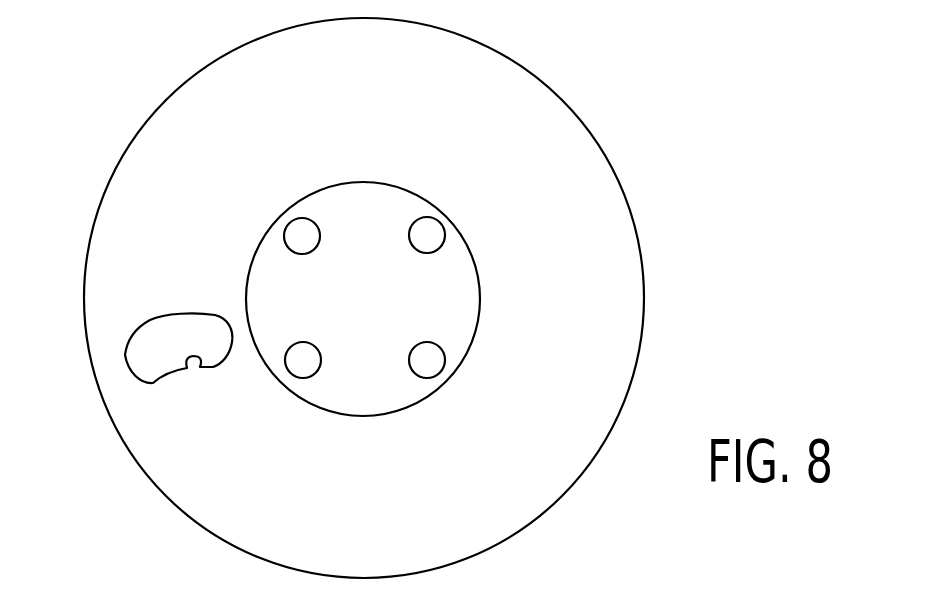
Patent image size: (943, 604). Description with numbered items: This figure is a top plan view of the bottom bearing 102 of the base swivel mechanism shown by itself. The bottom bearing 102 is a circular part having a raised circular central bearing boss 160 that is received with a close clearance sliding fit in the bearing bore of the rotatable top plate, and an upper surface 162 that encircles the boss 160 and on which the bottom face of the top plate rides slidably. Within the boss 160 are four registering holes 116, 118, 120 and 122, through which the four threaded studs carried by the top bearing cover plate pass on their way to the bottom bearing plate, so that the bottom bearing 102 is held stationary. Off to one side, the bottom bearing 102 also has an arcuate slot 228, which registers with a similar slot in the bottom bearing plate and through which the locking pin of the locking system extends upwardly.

The bottom bearing 102 is at (168, 97).
The registering hole 116 is at (285, 231).
The registering hole 118 is at (437, 236).
The registering hole 120 is at (311, 353).
The registering hole 122 is at (437, 347).
The raised circular central bearing boss 160 is at (467, 273).
The upper surface 162 is at (553, 468).
The arcuate slot 228 is at (200, 367).